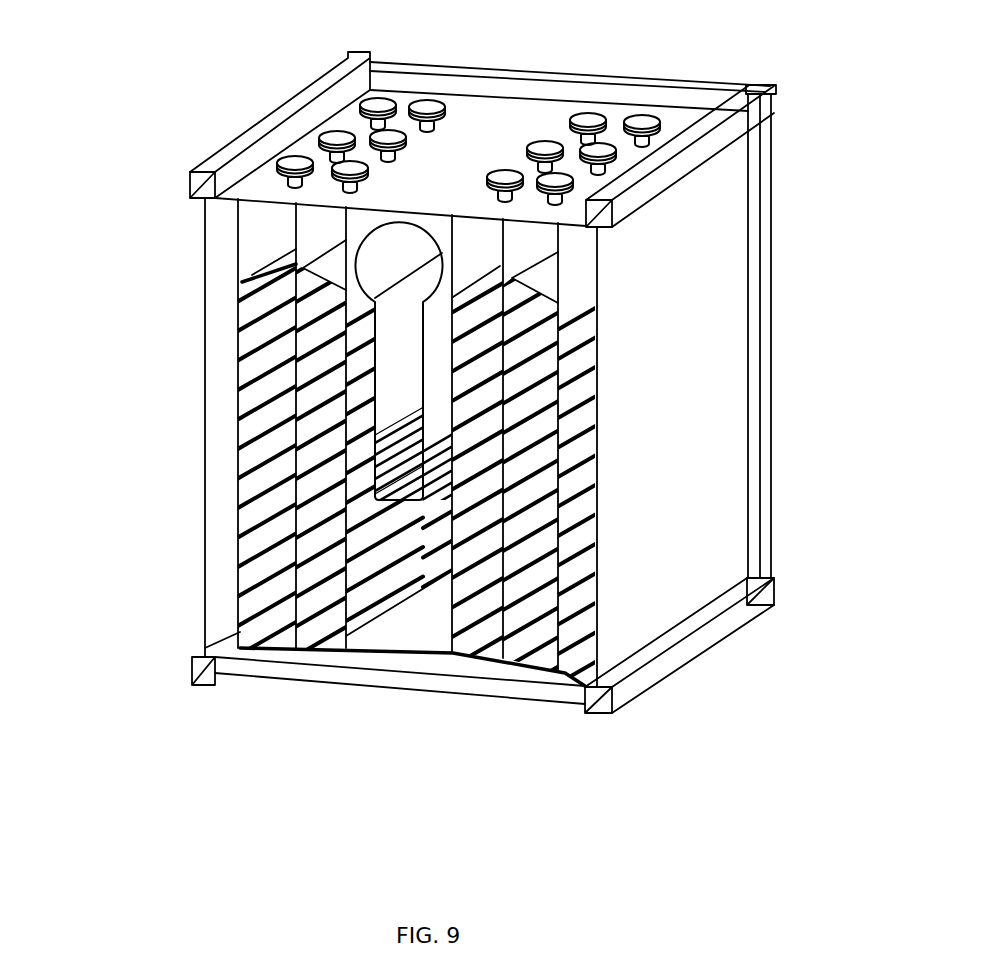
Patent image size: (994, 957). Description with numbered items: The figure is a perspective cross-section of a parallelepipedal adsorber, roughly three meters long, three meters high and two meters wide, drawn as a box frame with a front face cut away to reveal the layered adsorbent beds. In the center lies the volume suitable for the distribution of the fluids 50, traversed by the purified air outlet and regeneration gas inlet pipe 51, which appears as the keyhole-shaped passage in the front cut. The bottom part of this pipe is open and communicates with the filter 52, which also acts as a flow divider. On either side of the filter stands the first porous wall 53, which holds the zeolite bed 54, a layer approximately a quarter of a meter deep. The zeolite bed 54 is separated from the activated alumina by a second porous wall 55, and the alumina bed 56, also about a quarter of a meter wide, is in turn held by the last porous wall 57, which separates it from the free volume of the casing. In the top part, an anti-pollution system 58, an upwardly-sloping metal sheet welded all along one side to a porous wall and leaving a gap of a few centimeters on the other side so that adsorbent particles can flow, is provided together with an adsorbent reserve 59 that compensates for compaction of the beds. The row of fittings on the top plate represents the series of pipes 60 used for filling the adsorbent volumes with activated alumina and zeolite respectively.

The volume for the distribution of the fluids 50 is at (417, 628).
The purified air outlet and regeneration gas inlet pipe 51 is at (398, 247).
The filter 52 is at (407, 403).
The first porous wall 53 is at (362, 434).
The zeolite bed 54 is at (478, 547).
The second porous wall 55 is at (528, 467).
The alumina bed 56 is at (265, 535).
The last porous wall 57 is at (242, 316).
The anti-pollution system 58 is at (495, 284).
The adsorbent reserve 59 is at (267, 236).
The pipes for filling the adsorbent volumes 60 is at (650, 125).